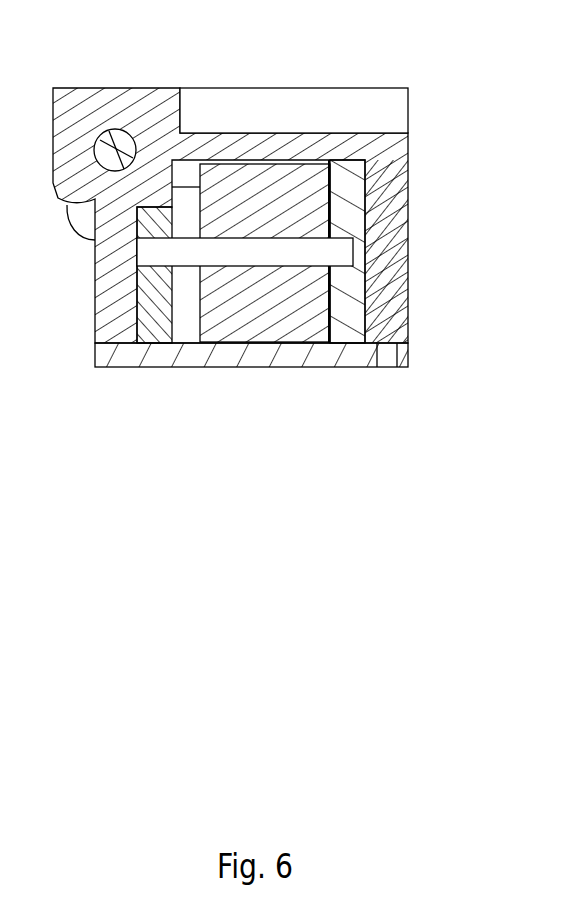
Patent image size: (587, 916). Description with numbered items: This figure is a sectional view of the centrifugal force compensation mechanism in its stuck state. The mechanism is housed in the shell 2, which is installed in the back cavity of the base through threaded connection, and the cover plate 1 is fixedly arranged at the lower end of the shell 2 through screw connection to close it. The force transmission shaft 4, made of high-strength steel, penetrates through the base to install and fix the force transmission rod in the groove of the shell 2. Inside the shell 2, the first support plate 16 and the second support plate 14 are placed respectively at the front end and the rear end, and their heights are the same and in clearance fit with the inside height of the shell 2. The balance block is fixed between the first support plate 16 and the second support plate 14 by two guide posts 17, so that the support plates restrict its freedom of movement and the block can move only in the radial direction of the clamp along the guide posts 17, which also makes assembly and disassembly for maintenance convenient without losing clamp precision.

The cover plate 1 is at (296, 362).
The shell 2 is at (117, 314).
The force transmission shaft 4 is at (134, 130).
The second support plate 14 is at (353, 153).
The first support plate 16 is at (171, 303).
The guide posts 17 is at (338, 242).